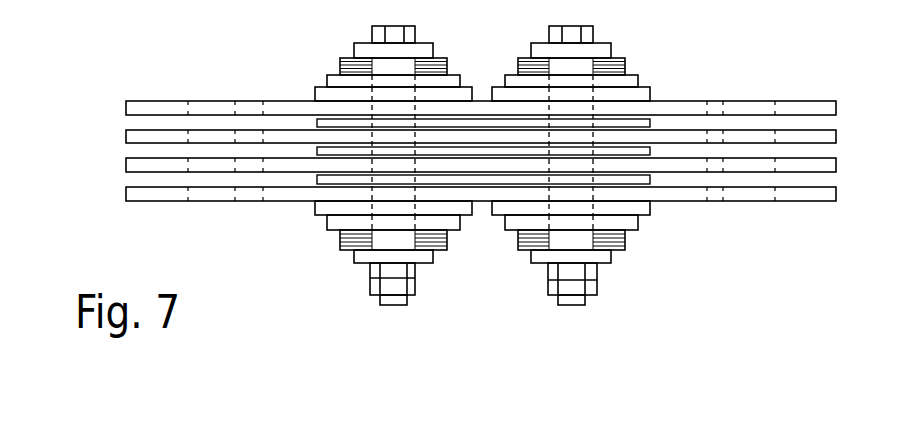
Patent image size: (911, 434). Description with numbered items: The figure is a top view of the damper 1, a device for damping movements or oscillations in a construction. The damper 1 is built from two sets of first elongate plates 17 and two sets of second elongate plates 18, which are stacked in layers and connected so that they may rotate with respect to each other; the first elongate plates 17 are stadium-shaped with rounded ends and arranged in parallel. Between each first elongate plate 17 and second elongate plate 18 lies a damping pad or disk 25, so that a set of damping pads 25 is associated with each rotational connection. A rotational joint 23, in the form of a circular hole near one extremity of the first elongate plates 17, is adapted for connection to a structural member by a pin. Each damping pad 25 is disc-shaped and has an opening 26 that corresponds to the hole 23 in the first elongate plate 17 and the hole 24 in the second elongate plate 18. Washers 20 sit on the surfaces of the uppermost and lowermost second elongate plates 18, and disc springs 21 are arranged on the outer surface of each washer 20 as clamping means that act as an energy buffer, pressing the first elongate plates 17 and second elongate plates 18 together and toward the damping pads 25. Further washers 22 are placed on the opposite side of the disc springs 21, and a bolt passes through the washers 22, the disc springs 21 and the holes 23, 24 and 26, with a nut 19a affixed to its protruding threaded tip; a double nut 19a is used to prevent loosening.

The damper 1 is at (806, 235).
The first elongate plates 17 is at (126, 200).
The second elongate plates 18 is at (628, 97).
The nut 19a is at (550, 264).
The washers 20 is at (506, 80).
The disc springs 21 is at (626, 60).
The washers 22 is at (612, 47).
The rotational joint 23 is at (190, 203).
The hole 24 is at (372, 70).
The damping pads or disks 25 is at (320, 150).
The opening 26 is at (334, 88).